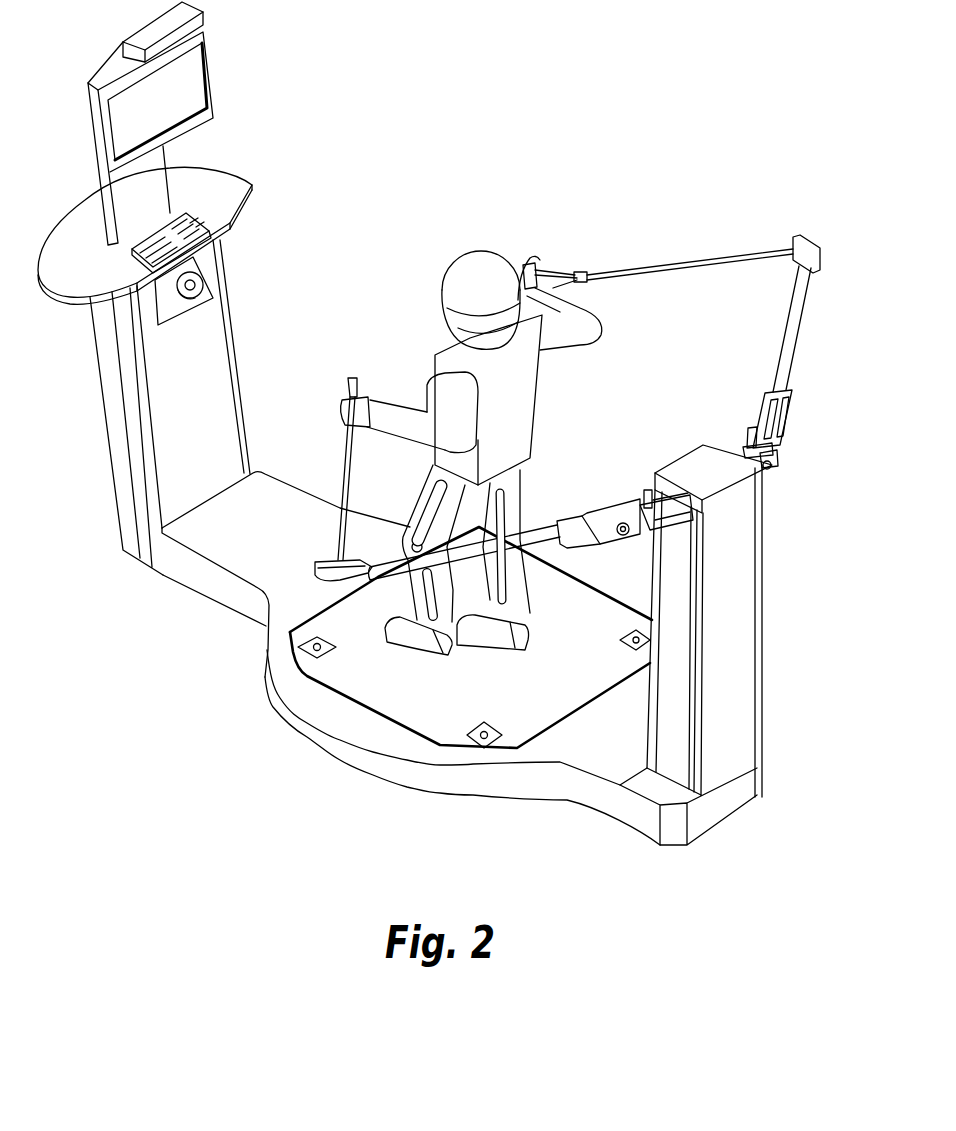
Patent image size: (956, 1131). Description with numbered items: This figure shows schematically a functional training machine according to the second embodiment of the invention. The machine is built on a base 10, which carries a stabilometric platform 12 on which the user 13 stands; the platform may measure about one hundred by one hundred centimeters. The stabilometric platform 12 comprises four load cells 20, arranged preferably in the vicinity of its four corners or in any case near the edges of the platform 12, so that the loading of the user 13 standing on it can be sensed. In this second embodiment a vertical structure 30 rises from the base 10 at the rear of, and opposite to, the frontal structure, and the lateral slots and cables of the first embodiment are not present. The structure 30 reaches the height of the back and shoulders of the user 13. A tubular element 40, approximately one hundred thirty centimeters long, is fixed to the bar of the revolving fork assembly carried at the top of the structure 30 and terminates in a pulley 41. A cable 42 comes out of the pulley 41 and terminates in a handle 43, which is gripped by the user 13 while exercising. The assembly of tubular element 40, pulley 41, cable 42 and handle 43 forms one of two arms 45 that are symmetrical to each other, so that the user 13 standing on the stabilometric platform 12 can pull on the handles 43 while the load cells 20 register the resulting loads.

The base 10 is at (317, 732).
The stabilometric platform 12 is at (417, 713).
The user 13 is at (520, 395).
The load cell 20 is at (468, 732).
The vertical structure 30 is at (737, 603).
The tubular element 40 is at (802, 317).
The pulley 41 is at (810, 248).
The cable 42 is at (660, 265).
The handle 43 is at (533, 268).
The arm 45 is at (777, 340).